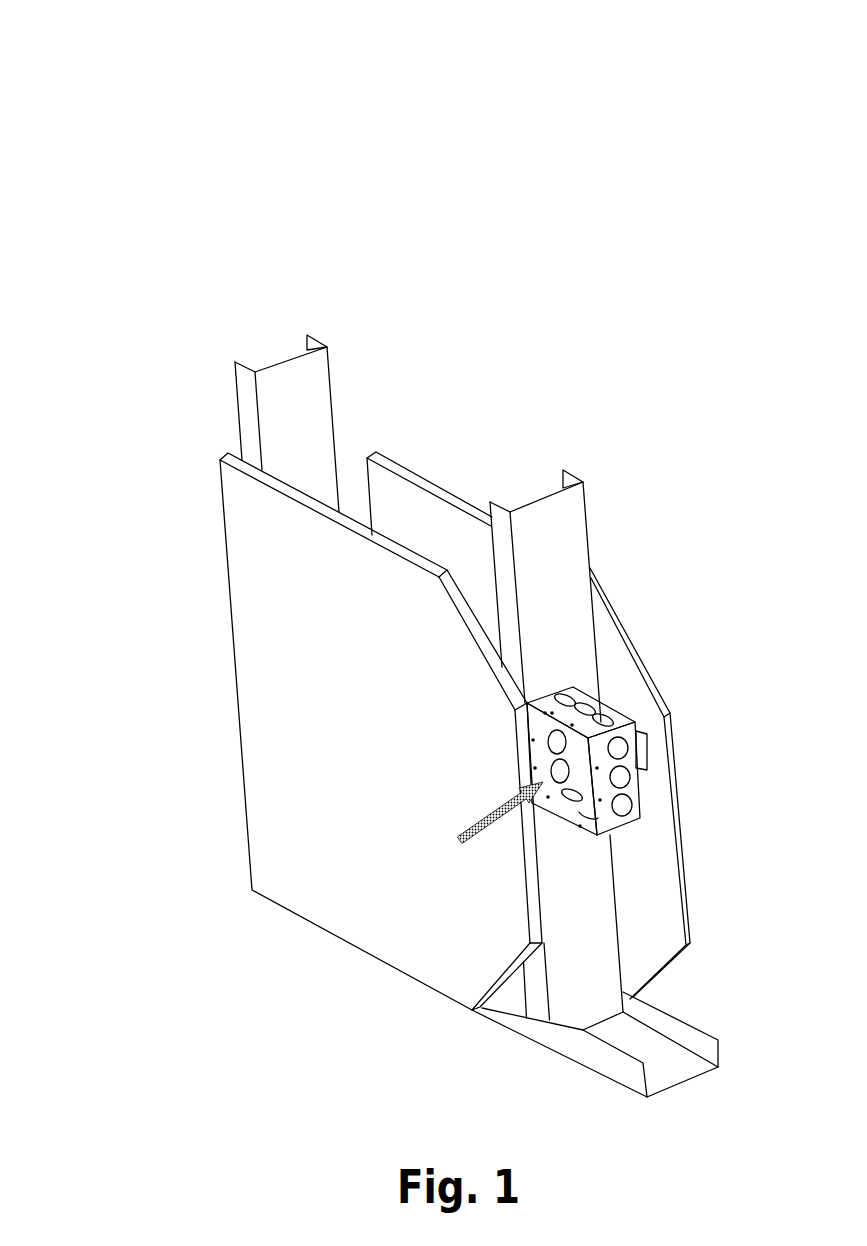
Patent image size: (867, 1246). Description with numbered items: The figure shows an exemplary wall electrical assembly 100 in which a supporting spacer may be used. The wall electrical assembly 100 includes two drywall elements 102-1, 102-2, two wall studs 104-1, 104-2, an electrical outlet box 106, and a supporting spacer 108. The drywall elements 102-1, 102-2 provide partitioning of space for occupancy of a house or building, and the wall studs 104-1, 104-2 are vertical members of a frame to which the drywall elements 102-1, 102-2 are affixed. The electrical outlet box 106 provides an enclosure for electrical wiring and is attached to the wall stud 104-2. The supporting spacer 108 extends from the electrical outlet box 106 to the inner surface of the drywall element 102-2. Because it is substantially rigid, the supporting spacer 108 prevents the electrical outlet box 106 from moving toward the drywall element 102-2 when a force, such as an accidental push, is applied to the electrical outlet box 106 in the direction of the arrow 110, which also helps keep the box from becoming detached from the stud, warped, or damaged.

The wall electrical assembly 100 is at (232, 80).
The drywall element 102-1 is at (360, 698).
The drywall element 102-2 is at (439, 548).
The wall stud 104-1 is at (554, 548).
The wall stud 104-2 is at (270, 413).
The electrical outlet box 106 is at (610, 717).
The supporting spacer 108 is at (647, 755).
The arrow 110 is at (458, 841).